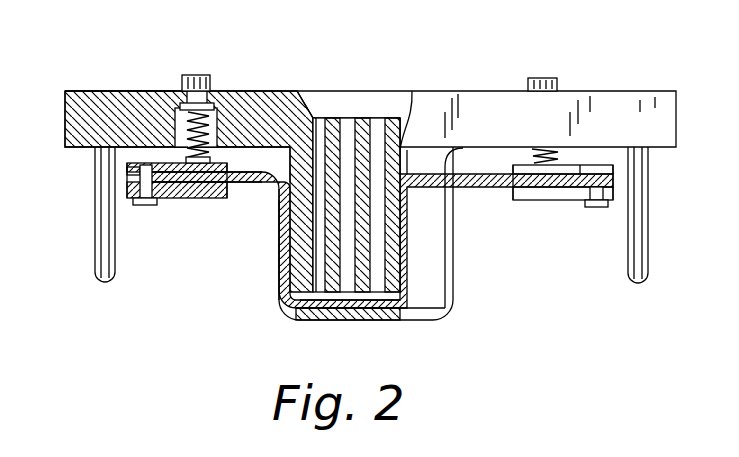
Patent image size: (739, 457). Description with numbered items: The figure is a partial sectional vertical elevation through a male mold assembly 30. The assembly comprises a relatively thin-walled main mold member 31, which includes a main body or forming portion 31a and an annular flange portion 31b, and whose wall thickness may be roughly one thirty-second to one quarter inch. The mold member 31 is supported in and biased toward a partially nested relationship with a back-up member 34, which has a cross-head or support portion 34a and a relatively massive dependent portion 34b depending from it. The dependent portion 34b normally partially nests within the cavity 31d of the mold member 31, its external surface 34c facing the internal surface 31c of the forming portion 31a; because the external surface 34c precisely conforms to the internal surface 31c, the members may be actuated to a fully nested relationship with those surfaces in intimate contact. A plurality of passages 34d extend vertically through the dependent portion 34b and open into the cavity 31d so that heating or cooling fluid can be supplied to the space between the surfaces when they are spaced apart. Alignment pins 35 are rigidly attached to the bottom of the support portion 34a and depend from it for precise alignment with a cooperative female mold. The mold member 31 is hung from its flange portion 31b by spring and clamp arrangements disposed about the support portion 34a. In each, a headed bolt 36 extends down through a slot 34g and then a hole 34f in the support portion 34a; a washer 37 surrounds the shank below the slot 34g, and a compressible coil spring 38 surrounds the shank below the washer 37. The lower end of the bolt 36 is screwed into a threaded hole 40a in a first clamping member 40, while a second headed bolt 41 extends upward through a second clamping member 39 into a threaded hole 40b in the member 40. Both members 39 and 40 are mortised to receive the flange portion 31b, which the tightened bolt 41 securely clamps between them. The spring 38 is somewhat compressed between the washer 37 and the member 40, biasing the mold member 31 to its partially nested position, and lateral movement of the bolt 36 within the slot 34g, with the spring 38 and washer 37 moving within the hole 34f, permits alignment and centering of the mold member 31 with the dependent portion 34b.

The male mold assembly 30 is at (306, 86).
The main mold member 31 is at (442, 257).
The main body or forming portion 31a is at (278, 247).
The annular flange portion 31b is at (203, 198).
The internal surface 31c is at (321, 320).
The cavity 31d is at (376, 308).
The back-up member 34 is at (361, 298).
The cross-head or support portion 34a is at (270, 96).
The dependent portion 34b is at (287, 302).
The external surface 34c is at (282, 277).
The passages 34d is at (452, 275).
The hole 34f is at (130, 91).
The slot 34g is at (185, 100).
The alignment pins 35 is at (97, 250).
The headed bolt 36 is at (200, 75).
The washer 37 is at (214, 106).
The compressible coil spring 38 is at (174, 113).
The second clamping member 39 is at (168, 198).
The first clamping member 40 is at (133, 163).
The threaded hole 40a is at (213, 159).
The threaded hole 40b is at (125, 170).
The second headed bolt 41 is at (144, 205).